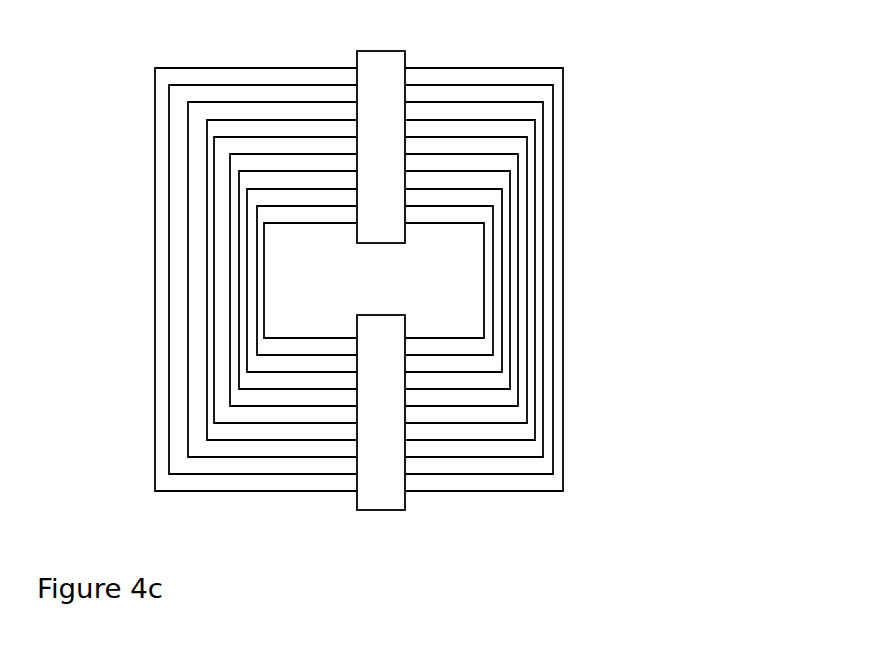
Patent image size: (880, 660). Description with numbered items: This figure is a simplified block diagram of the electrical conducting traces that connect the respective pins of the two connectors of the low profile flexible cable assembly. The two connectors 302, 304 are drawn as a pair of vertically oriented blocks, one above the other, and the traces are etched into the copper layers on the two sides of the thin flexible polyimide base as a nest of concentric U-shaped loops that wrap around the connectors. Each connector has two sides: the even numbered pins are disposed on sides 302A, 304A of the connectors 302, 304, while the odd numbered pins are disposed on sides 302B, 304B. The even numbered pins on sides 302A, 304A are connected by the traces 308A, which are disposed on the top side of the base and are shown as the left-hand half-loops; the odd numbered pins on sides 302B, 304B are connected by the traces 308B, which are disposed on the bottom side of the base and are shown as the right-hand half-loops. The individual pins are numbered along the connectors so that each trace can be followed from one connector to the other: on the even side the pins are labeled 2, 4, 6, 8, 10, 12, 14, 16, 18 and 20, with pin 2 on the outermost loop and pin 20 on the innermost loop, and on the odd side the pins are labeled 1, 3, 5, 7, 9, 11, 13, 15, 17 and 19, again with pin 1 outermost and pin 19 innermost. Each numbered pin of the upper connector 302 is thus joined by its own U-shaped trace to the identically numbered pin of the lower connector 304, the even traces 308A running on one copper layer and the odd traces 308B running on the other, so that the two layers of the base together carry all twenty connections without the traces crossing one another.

The connector 302 is at (403, 62).
The connector side 302A is at (357, 148).
The connector side 302B is at (403, 133).
The connector 304 is at (396, 512).
The connector side 304A is at (356, 438).
The connector side 304B is at (402, 455).
The traces 308A is at (207, 272).
The traces 308B is at (582, 272).
The coil turn 1 is at (484, 272).
The coil turn 2 is at (256, 272).
The coil turn 3 is at (479, 272).
The coil turn 4 is at (263, 272).
The coil turn 5 is at (474, 272).
The coil turn 6 is at (272, 272).
The coil turn 7 is at (470, 273).
The coil turn 8 is at (282, 273).
The coil turn 9 is at (466, 273).
The coil turn 10 is at (285, 273).
The coil turn 11 is at (461, 273).
The coil turn 12 is at (293, 273).
The coil turn 13 is at (457, 273).
The coil turn 14 is at (298, 273).
The coil turn 15 is at (453, 273).
The coil turn 16 is at (302, 273).
The coil turn 17 is at (449, 273).
The coil turn 18 is at (307, 273).
The coil turn 19 is at (444, 273).
The coil turn 20 is at (310, 273).